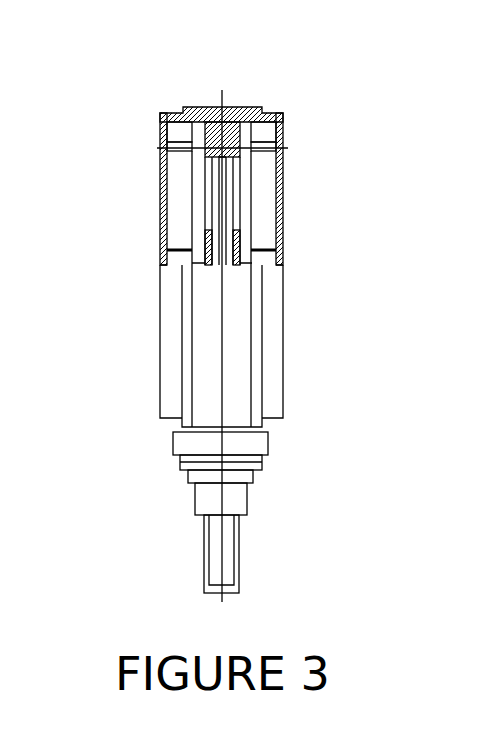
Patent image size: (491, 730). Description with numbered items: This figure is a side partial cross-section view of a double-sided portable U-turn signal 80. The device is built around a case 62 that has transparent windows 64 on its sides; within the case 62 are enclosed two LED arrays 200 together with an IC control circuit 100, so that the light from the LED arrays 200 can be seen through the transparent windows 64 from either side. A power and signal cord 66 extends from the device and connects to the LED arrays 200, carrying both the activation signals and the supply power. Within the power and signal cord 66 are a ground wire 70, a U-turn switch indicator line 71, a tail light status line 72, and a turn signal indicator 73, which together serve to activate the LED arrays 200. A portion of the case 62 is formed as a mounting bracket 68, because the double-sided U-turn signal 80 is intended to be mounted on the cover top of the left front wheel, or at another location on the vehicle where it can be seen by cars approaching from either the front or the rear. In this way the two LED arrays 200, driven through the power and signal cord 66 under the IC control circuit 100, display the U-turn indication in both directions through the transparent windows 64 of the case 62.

The double-sided U-turn signal 80 is at (147, 117).
The case 62 is at (224, 105).
The transparent windows 64 is at (163, 160).
The IC control circuit 100 is at (205, 230).
The LED arrays 200 is at (185, 232).
The mounting bracket 68 is at (183, 442).
The ground wire 70 is at (224, 456).
The U-turn switch indicator line 71 is at (224, 456).
The tail light status line 72 is at (224, 456).
The turn signal indicator 73 is at (230, 545).
The power and signal cord 66 is at (240, 570).